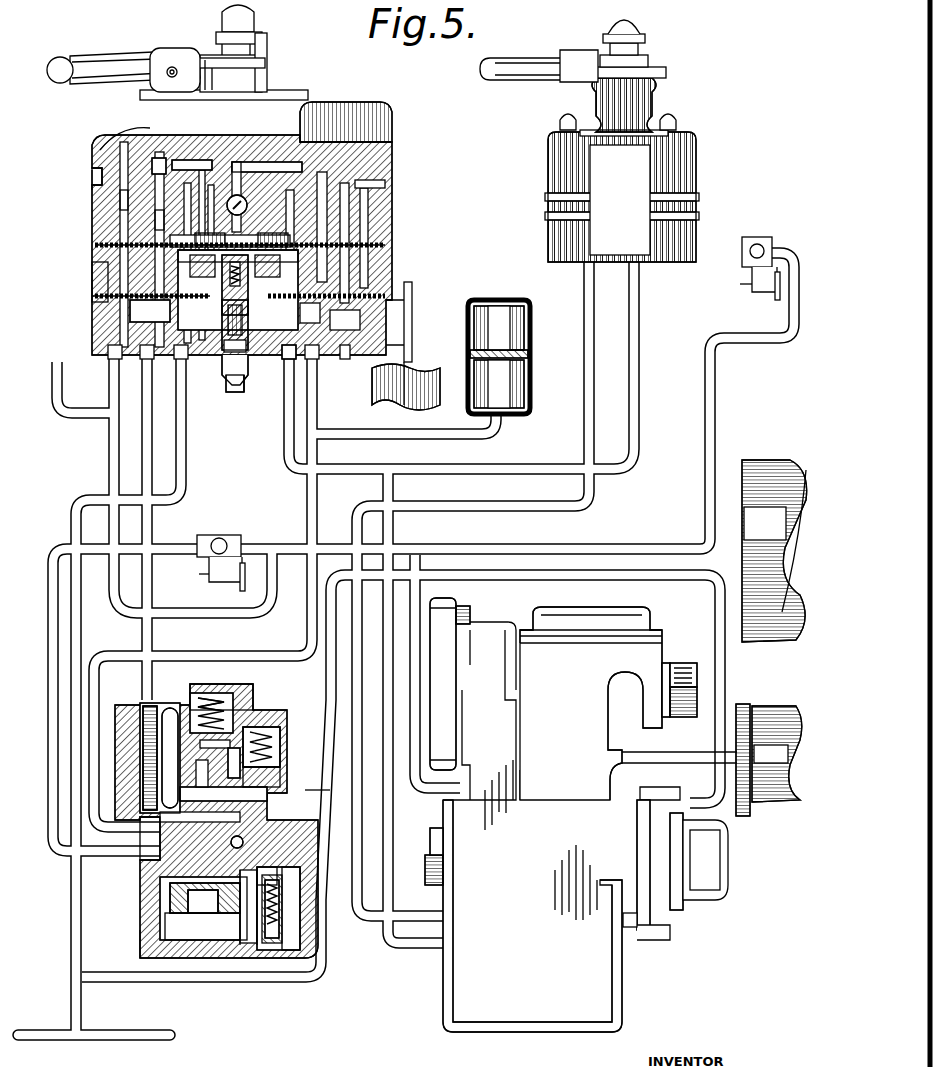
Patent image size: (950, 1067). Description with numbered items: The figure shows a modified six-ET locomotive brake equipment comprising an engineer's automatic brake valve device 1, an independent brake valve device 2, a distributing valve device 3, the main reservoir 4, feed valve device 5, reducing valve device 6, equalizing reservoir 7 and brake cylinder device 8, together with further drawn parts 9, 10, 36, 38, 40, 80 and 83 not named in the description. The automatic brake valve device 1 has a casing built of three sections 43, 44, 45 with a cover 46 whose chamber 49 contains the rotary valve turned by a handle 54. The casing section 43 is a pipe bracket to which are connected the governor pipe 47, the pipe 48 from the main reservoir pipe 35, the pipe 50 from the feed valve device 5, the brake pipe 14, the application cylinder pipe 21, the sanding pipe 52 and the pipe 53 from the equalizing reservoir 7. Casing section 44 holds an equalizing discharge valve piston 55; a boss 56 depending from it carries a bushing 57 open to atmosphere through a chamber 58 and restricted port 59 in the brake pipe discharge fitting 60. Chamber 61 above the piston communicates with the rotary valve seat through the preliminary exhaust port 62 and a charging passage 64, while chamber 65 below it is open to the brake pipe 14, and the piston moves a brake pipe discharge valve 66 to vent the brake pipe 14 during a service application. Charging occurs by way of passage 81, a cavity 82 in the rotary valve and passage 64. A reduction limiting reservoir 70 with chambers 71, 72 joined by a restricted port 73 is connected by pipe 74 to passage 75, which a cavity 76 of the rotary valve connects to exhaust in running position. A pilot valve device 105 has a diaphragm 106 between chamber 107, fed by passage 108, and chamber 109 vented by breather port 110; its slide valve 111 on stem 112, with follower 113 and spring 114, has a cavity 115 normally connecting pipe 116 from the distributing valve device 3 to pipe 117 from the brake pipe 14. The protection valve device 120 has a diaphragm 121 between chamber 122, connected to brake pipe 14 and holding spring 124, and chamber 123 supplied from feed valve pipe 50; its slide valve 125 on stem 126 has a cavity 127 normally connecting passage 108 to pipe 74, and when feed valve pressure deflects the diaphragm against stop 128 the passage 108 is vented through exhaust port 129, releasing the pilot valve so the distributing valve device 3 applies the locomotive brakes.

The engineer's automatic brake valve device 1 is at (283, 92).
The independent brake valve device 2 is at (655, 72).
The distributing valve device 3 is at (605, 1005).
The main reservoir 4 is at (760, 470).
The feed valve device 5 is at (219, 540).
The reducing valve device 6 is at (748, 240).
The equalizing reservoir 7 is at (406, 373).
The brake cylinder device 8 is at (764, 712).
The pump 9 is at (690, 912).
The cylinder plate 10 is at (465, 618).
The brake pipe 14 is at (180, 407).
The application cylinder pipe 21 is at (290, 397).
The main reservoir pipe 35 is at (462, 548).
The conduit 36 is at (378, 942).
The accumulator valve 38 is at (548, 246).
The handle 40 is at (520, 68).
The casing section 43 is at (95, 318).
The casing section 44 is at (92, 268).
The casing section 45 is at (125, 176).
The cover 46 is at (140, 135).
The pipe 47 is at (92, 298).
The pipe 48 is at (113, 420).
The rotary valve chamber 49 is at (140, 142).
The feed valve pipe 50 is at (145, 373).
The sanding pipe 52 is at (380, 380).
The pipe 53 is at (412, 340).
The handle 54 is at (80, 70).
The equalizing discharge valve piston 55 is at (300, 258).
The boss 56 is at (215, 382).
The bushing 57 is at (222, 330).
The chamber 58 is at (273, 366).
The restricted port 59 is at (235, 392).
The brake pipe discharge fitting 60 is at (242, 385).
The chamber 61 is at (262, 220).
The preliminary exhaust port 62 is at (195, 224).
The passage 64 is at (200, 205).
The chamber 65 is at (163, 310).
The brake pipe discharge valve 66 is at (210, 345).
The reduction limiting reservoir 70 is at (522, 356).
The reduction chamber 71 is at (508, 394).
The reduction chamber 72 is at (505, 320).
The restricted port 73 is at (510, 352).
The pipe 74 is at (450, 436).
The passage 75 is at (300, 282).
The cavity 76 is at (318, 118).
The port 80 is at (158, 160).
The passage 81 is at (170, 249).
The cavity 82 is at (192, 162).
The port 83 is at (205, 200).
The pilot valve device 105 is at (158, 688).
The flexible diaphragm 106 is at (210, 690).
The chamber 107 is at (168, 712).
The passage 108 is at (150, 820).
The chamber 109 is at (275, 725).
The breather port 110 is at (250, 726).
The slide valve 111 is at (275, 782).
The stem 112 is at (195, 735).
The follower 113 is at (143, 712).
The spring 114 is at (280, 758).
The cavity 115 is at (272, 798).
The pipe 116 is at (716, 604).
The pipe 117 is at (315, 828).
The protection valve device 120 is at (250, 958).
The flexible diaphragm 121 is at (268, 958).
The chamber 122 is at (298, 958).
The chamber 123 is at (190, 920).
The spring 124 is at (300, 880).
The slide valve 125 is at (180, 890).
The stem 126 is at (175, 912).
The cavity 127 is at (215, 920).
The stop 128 is at (308, 912).
The atmosphere exhaust port 129 is at (370, 818).